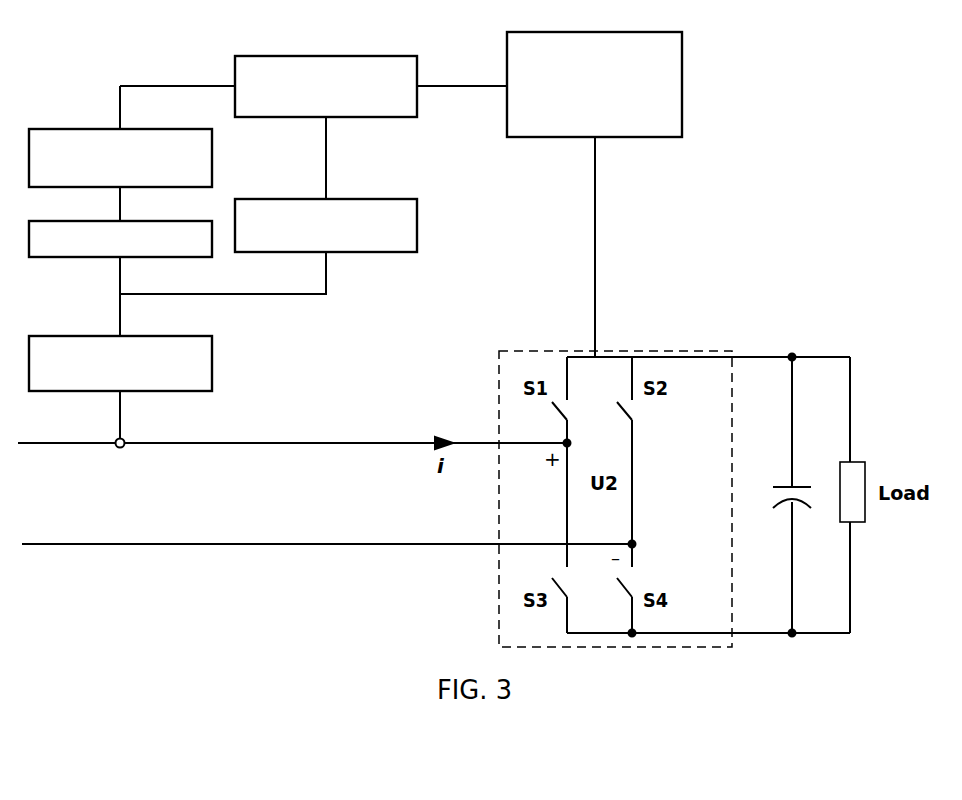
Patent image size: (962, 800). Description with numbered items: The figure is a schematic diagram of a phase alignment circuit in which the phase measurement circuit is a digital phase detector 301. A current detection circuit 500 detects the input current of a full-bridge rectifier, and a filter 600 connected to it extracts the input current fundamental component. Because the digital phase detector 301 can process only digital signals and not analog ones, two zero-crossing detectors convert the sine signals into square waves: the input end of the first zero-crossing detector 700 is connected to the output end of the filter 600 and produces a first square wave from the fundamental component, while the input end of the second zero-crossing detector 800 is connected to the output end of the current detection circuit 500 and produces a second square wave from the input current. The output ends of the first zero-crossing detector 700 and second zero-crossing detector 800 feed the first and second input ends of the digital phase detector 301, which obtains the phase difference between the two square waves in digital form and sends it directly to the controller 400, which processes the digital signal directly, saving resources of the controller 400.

The digital phase detector 301 is at (326, 74).
The controller 400 is at (594, 71).
The current detection circuit 500 is at (120, 348).
The filter 600 is at (120, 225).
The first zero-crossing detector 700 is at (120, 145).
The second zero-crossing detector 800 is at (326, 211).